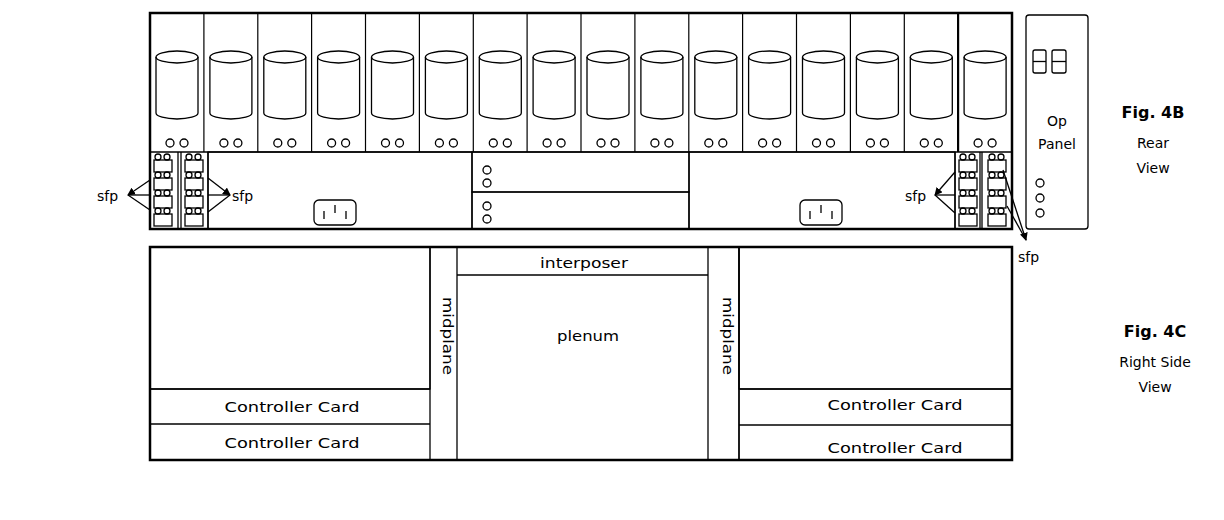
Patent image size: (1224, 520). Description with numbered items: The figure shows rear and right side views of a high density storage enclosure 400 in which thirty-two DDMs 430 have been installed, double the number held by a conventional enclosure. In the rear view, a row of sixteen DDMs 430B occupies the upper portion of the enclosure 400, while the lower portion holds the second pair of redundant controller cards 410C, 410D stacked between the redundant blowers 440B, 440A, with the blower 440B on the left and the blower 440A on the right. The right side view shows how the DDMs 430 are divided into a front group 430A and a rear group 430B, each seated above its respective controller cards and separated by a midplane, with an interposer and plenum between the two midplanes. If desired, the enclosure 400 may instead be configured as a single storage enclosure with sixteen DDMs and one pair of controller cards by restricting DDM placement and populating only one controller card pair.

In FIG. 4B, the high density storage enclosure 400 is at (150, 40).
In FIG. 4C, the high density storage enclosure 400 is at (149, 277).
In FIG. 4B, the DDMs 430B is at (126, 72).
In FIG. 4C, the DDMs 430B is at (875, 318).
In FIG. 4C, the DDMs 430A is at (290, 318).
In FIG. 4C, the DDMs 430 is at (875, 353).
In FIG. 4B, the controller card 410C is at (661, 175).
In FIG. 4B, the controller card 410D is at (661, 211).
In FIG. 4B, the blower 440B is at (340, 190).
In FIG. 4B, the blower 440A is at (822, 190).